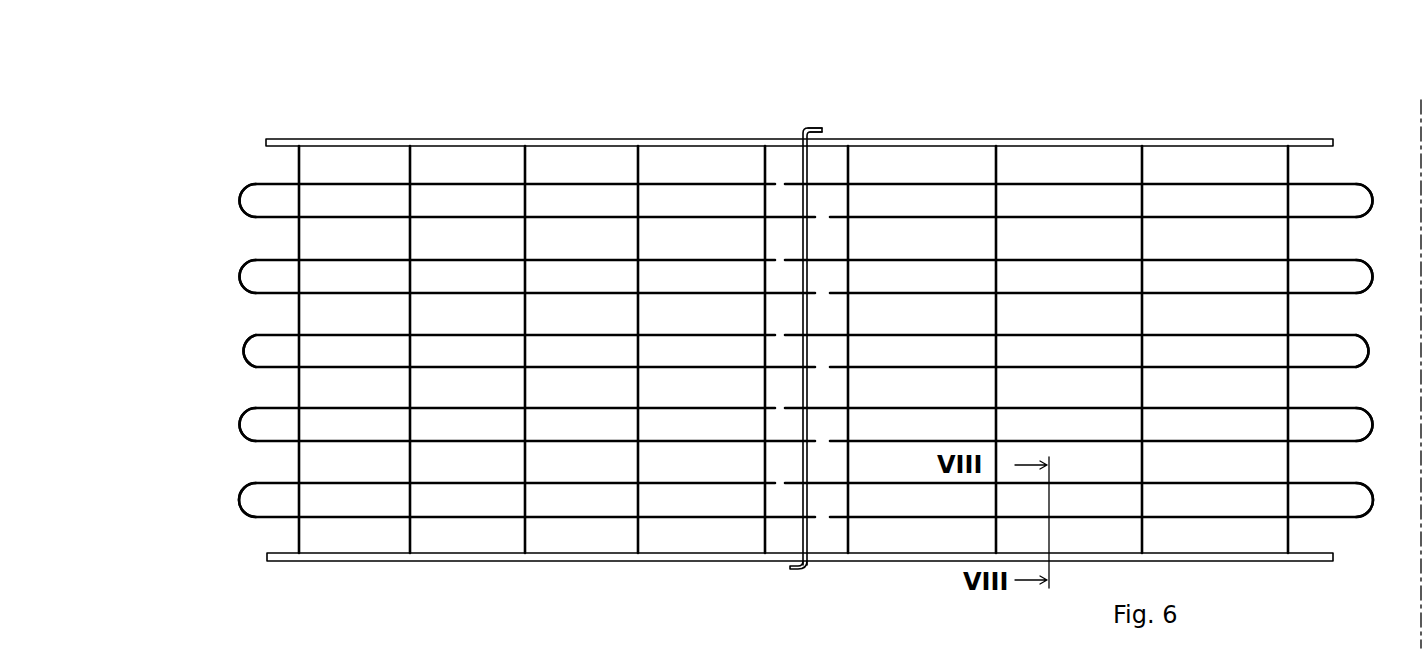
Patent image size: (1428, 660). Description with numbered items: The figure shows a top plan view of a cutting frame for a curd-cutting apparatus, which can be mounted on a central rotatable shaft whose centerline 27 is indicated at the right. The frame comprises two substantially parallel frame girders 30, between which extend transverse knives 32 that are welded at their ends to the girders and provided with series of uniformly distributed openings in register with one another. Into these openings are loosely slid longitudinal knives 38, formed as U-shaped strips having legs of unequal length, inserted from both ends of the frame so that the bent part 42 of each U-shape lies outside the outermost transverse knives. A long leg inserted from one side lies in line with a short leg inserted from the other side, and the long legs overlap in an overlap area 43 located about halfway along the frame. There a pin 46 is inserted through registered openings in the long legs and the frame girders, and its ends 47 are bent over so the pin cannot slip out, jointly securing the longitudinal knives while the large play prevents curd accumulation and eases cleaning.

The centerline 27 is at (1420, 600).
The frame girder 30 is at (503, 138).
The knives 32 is at (297, 168).
The longitudinal knives 38 is at (478, 182).
The bent part 42 is at (240, 200).
The overlap area 43 is at (802, 95).
The pin 46 is at (803, 160).
The ends 47 is at (823, 128).